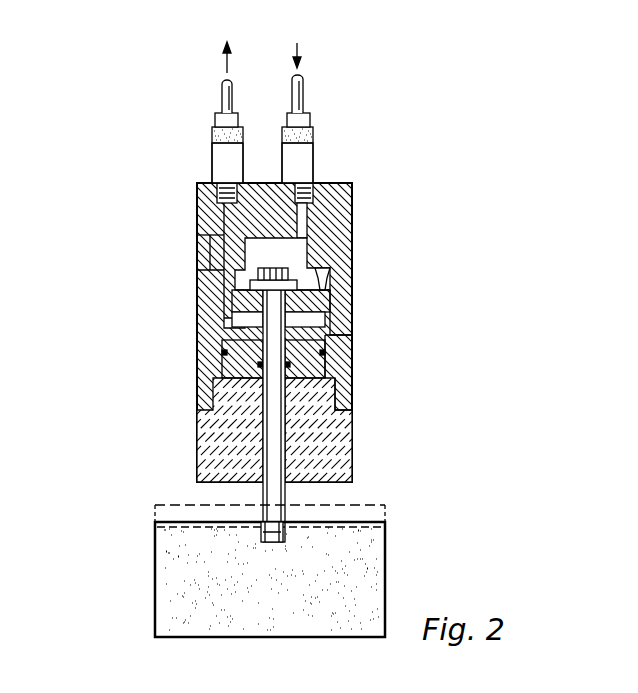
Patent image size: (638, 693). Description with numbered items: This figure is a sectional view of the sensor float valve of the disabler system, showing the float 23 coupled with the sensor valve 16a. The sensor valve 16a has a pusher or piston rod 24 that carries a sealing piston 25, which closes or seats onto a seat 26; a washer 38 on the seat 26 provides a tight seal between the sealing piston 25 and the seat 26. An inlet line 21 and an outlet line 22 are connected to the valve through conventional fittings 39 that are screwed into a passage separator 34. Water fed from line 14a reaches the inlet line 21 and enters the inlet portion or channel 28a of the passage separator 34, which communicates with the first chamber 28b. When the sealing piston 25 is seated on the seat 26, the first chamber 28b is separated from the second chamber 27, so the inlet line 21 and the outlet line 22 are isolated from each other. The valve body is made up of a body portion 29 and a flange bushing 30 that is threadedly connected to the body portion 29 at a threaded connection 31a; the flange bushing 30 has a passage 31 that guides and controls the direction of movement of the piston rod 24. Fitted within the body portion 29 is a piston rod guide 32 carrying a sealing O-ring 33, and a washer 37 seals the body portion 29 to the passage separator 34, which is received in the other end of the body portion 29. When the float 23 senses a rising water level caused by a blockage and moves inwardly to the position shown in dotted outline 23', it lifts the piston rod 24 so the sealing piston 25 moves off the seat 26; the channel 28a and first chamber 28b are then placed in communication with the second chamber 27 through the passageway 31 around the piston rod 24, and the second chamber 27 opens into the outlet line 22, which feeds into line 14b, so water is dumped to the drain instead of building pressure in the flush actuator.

The sensor valve 16a is at (189, 370).
The line 14a is at (350, 53).
The line 14b is at (176, 56).
The inlet line 21 is at (303, 100).
The outlet line 22 is at (221, 103).
The conventional fittings 39 is at (213, 160).
The passage separator 34 is at (200, 205).
The washer 37 is at (200, 263).
The inlet portion or channel 28a is at (300, 215).
The first chamber 28b is at (290, 250).
The sealing piston 25 is at (290, 268).
The seat 26 is at (250, 285).
The second chamber 27 is at (225, 322).
The washer 38 is at (330, 278).
The passage 31 is at (352, 308).
The piston rod guide 32 is at (335, 328).
The body portion 29 is at (352, 352).
The sealing O-ring 33 is at (333, 362).
The threaded connection 31a is at (338, 398).
The flange bushing 30 is at (197, 450).
The pusher or piston rod 24 is at (275, 464).
The dotted outline 23' is at (331, 505).
The float 23 is at (217, 579).